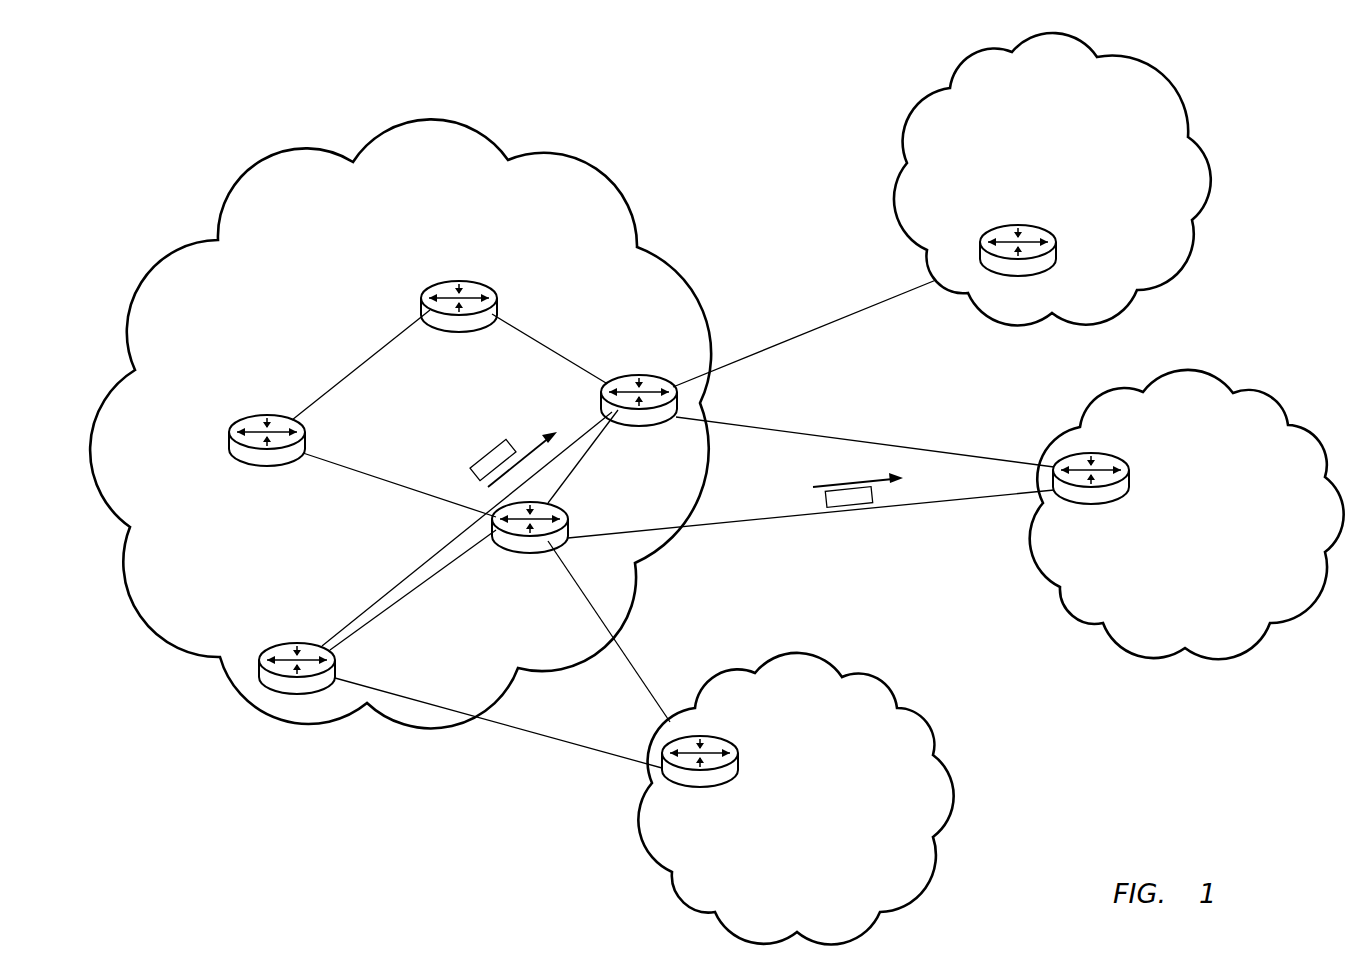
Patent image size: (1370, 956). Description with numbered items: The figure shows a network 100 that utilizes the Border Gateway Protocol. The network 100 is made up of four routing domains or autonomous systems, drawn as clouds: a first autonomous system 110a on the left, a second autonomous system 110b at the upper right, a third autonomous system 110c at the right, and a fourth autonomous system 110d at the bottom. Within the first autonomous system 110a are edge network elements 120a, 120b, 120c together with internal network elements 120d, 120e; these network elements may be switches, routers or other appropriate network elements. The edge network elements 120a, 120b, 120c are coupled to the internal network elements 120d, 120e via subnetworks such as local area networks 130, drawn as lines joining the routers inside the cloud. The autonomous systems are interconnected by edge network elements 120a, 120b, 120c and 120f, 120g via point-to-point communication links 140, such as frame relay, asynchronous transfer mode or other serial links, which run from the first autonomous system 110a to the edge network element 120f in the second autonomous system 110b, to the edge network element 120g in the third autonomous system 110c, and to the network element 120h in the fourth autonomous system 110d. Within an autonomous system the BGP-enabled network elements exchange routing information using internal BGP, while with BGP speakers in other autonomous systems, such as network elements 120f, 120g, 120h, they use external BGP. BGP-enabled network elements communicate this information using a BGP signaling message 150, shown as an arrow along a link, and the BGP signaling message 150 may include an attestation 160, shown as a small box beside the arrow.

The network 100 is at (1250, 84).
The autonomous system 110a is at (290, 262).
The autonomous system 110b is at (1090, 188).
The autonomous system 110c is at (1212, 537).
The autonomous system 110d is at (810, 807).
The edge network element 120a is at (517, 540).
The edge network element 120b is at (282, 643).
The edge network element 120c is at (632, 372).
The network element 120d is at (448, 282).
The network element 120e is at (252, 414).
The edge network element 120f is at (1003, 270).
The edge network element 120g is at (1078, 490).
The network element 120h is at (660, 772).
The local area network 130 is at (388, 356).
The point-to-point communication link 140 is at (823, 327).
The BGP signaling message 150 is at (520, 436).
The attestation 160 is at (482, 464).